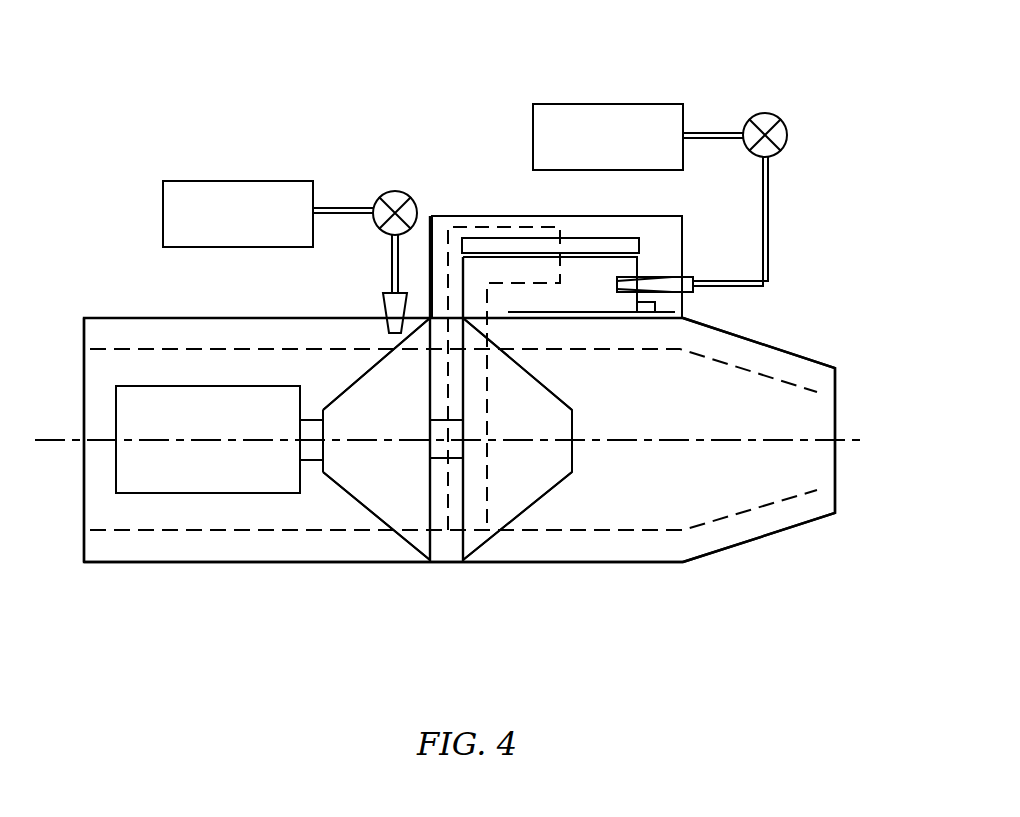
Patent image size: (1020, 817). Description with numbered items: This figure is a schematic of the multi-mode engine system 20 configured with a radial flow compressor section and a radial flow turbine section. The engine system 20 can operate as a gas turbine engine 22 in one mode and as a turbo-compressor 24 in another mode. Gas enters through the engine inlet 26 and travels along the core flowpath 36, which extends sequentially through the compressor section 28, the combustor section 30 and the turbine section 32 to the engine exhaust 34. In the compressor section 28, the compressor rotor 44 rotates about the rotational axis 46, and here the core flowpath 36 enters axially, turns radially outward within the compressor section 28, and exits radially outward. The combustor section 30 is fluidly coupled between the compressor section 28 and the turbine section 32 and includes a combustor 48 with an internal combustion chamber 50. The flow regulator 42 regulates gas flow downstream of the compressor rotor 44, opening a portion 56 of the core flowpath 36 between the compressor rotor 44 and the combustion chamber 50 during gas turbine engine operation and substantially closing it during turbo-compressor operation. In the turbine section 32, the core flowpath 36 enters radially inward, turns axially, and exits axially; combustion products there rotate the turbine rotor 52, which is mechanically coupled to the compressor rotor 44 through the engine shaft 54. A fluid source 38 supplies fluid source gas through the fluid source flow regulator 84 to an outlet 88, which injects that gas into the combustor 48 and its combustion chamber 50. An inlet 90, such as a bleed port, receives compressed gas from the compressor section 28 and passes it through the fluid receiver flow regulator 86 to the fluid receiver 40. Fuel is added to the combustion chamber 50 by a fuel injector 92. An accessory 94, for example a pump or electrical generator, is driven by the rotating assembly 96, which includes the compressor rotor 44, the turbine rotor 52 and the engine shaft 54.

The multi-mode engine system 20 is at (172, 72).
The gas turbine engine 22 is at (437, 176).
The turbo-compressor 24 is at (548, 570).
The engine inlet 26 is at (84, 352).
The compressor section 28 is at (370, 556).
The combustor section 30 is at (663, 238).
The turbine section 32 is at (492, 546).
The engine exhaust 34 is at (856, 396).
The core flowpath 36 is at (200, 350).
The fluid source 38 is at (573, 104).
The fluid receiver 40 is at (203, 181).
The flow regulator 42 is at (488, 238).
The compressor rotor 44 is at (333, 497).
The rotational axis 46 is at (35, 442).
The combustor 48 is at (640, 262).
The combustion chamber 50 is at (620, 270).
The turbine rotor 52 is at (540, 505).
The engine shaft 54 is at (430, 465).
The portion of the core flowpath 56 is at (566, 252).
The fluid source flow regulator 84 is at (765, 113).
The fluid receiver flow regulator 86 is at (388, 192).
The outlet 88 is at (697, 293).
The inlet 90 is at (383, 300).
The fuel injector 92 is at (645, 312).
The accessory 94 is at (221, 480).
The rotating assembly 96 is at (562, 391).